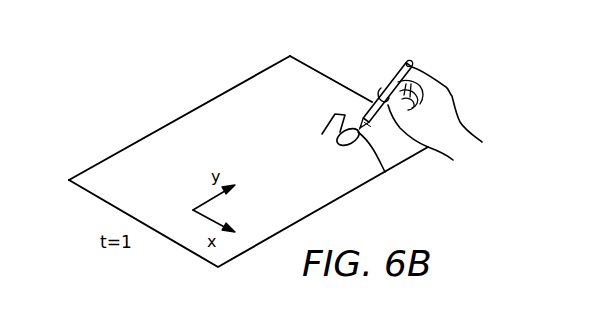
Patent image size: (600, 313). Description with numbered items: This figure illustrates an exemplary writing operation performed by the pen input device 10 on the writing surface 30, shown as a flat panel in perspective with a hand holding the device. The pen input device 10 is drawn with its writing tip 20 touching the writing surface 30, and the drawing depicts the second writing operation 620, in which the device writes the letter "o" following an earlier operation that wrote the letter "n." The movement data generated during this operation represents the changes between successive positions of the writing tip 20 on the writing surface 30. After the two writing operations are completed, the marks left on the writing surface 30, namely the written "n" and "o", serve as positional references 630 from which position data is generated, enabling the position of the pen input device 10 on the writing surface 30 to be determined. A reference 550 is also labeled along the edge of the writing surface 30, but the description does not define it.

The pen input device 10 is at (406, 62).
The writing tip 20 is at (357, 124).
The writing surface 30 is at (135, 152).
The writing surface edge 550 is at (213, 96).
The second writing operation 620 is at (385, 172).
The positional references 630 is at (313, 128).